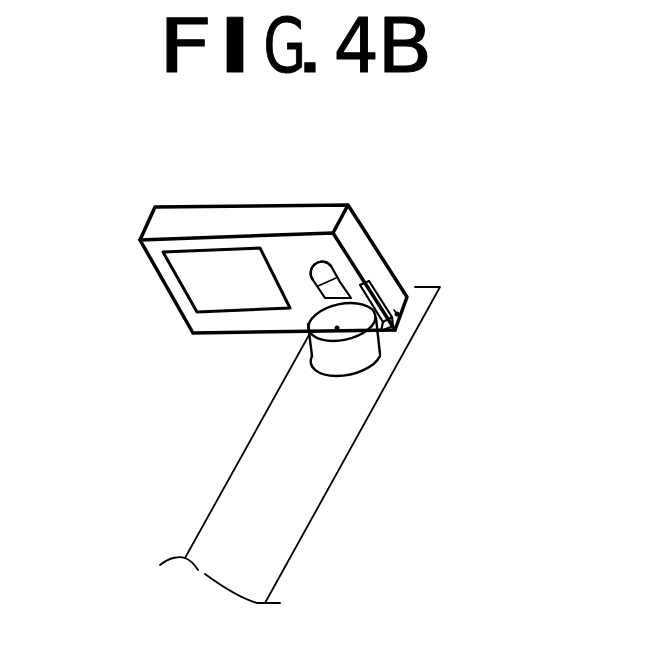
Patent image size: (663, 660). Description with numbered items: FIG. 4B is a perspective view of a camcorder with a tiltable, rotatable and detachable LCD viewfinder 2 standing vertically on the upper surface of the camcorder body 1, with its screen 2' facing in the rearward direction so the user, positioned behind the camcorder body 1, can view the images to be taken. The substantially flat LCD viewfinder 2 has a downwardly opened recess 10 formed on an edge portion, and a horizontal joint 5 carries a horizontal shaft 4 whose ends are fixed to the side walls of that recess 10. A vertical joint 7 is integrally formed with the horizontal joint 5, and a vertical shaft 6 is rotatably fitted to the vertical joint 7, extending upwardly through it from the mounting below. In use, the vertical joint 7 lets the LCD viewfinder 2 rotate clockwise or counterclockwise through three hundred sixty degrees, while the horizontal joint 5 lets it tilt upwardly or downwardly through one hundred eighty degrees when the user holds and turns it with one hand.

The camcorder body 1 is at (313, 493).
The LCD viewfinder 2 is at (273, 234).
The screen 2' is at (188, 312).
The horizontal shaft 4 is at (398, 314).
The horizontal joint 5 is at (385, 318).
The vertical shaft 6 is at (337, 328).
The vertical joint 7 is at (355, 349).
The recess 10 is at (327, 270).